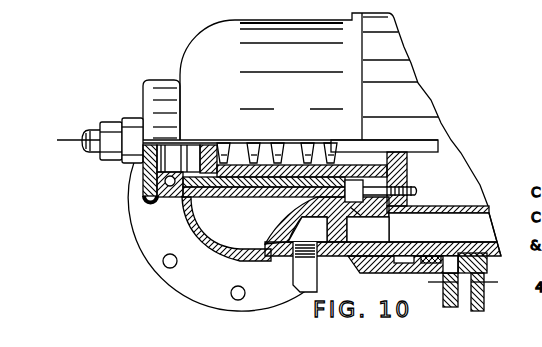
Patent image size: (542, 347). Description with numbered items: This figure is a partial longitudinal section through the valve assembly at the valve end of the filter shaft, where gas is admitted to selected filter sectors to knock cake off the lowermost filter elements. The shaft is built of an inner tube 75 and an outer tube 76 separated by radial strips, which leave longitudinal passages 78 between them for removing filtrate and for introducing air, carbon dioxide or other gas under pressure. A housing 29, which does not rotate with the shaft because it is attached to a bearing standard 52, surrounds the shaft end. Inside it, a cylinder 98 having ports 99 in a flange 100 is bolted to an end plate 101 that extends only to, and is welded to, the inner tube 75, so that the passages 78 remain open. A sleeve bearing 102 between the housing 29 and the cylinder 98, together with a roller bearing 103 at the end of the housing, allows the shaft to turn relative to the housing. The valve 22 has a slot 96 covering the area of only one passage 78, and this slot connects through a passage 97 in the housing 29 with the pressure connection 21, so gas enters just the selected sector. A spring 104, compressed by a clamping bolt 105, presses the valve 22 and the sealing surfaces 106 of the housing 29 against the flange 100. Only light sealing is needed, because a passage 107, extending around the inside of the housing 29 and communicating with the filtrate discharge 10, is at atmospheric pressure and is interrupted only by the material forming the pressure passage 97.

The filtrate discharge 10 is at (148, 243).
The pressure connection 21 is at (293, 273).
The valve 22 is at (336, 257).
The housing 29 is at (207, 38).
The bearing standard 52 is at (485, 296).
The inner tube 75 is at (462, 208).
The outer tube 76 is at (440, 256).
The longitudinal passages 78 is at (485, 225).
The slot 96 is at (340, 232).
The passage 97 is at (307, 229).
The cylinder 98 is at (344, 174).
The ports 99 is at (378, 238).
The flange 100 is at (410, 193).
The end plate 101 is at (407, 164).
The sleeve bearing 102 is at (248, 186).
The roller bearing 103 is at (161, 203).
The spring 104 is at (253, 140).
The clamping bolt 105 is at (83, 148).
The sealing surfaces 106 is at (350, 207).
The passage 107 is at (231, 236).